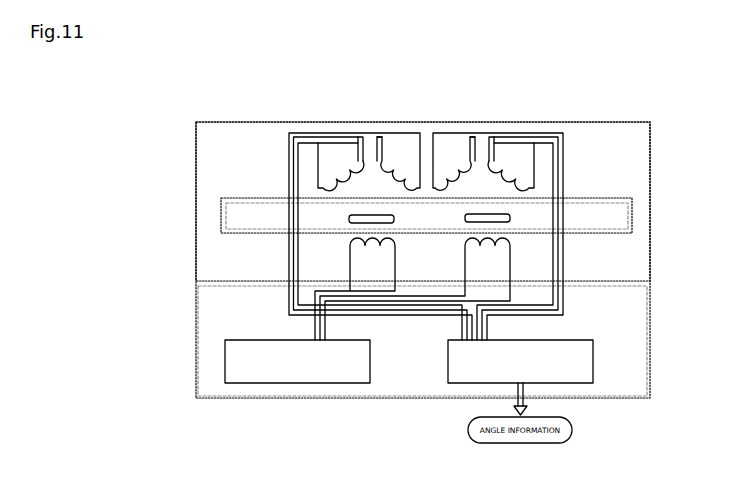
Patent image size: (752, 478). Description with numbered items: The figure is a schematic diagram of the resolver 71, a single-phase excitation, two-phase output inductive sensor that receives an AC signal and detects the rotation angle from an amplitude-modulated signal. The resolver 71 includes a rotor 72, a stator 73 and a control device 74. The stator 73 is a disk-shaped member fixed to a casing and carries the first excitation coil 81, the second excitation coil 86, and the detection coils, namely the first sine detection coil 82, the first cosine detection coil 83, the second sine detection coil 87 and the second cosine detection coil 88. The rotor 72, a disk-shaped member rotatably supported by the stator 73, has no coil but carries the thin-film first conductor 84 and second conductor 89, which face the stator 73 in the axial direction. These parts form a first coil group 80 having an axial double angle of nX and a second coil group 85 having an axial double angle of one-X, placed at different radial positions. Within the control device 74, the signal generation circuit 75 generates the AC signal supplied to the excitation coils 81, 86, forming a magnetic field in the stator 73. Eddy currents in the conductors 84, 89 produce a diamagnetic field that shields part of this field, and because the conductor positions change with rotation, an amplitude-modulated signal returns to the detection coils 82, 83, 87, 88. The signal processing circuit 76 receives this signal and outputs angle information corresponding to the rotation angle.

The resolver 71 is at (666, 118).
The rotor 72 is at (633, 208).
The stator 73 is at (651, 152).
The control device 74 is at (651, 351).
The signal generation circuit 75 is at (372, 362).
The signal processing circuit 76 is at (594, 362).
The first coil group 80 is at (431, 206).
The first excitation coil 81 is at (352, 240).
The first sine detection coil 82 is at (360, 137).
The first cosine detection coil 83 is at (379, 137).
The first conductor 84 is at (395, 219).
The second coil group 85 is at (575, 112).
The second excitation coil 86 is at (507, 242).
The second sine detection coil 87 is at (473, 137).
The second cosine detection coil 88 is at (492, 137).
The second conductor 89 is at (465, 218).